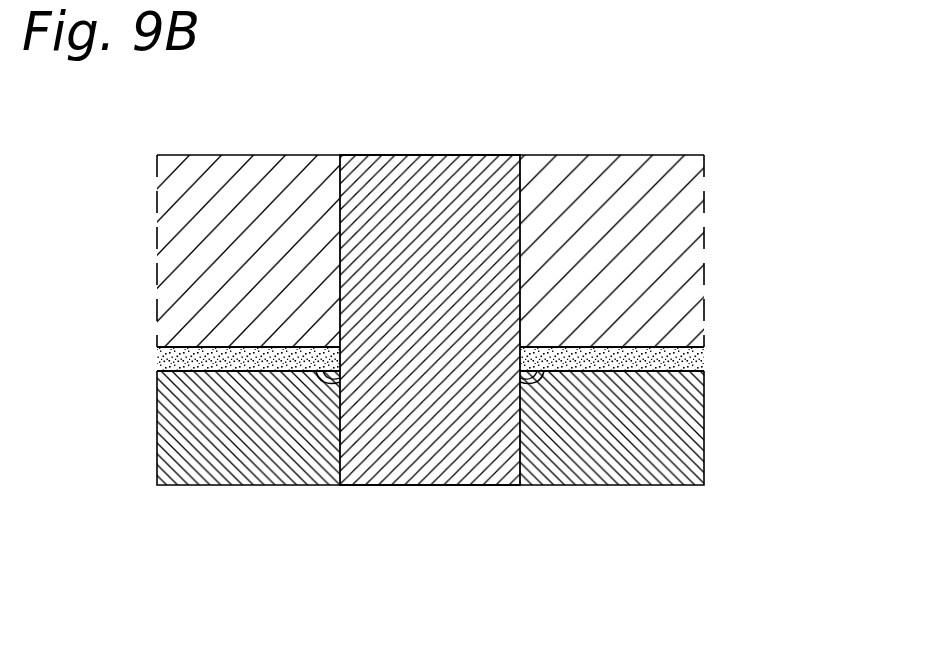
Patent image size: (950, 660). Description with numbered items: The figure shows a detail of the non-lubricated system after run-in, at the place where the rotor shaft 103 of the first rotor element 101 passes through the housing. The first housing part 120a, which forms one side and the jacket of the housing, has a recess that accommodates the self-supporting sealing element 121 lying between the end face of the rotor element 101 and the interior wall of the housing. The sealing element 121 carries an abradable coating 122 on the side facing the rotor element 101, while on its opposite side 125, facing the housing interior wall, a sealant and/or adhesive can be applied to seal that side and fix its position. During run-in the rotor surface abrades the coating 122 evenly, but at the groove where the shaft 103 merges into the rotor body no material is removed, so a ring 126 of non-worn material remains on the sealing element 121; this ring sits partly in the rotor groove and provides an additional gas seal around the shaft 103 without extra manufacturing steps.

The first rotor element 101 is at (266, 444).
The rotor shaft 103 is at (481, 172).
The first housing part 120a is at (640, 259).
The self-supporting sealing element 121 is at (251, 355).
The abradable coating 122 is at (681, 372).
The opposite side of the sealing element 125 is at (671, 347).
The ring of non-worn material 126 is at (531, 373).